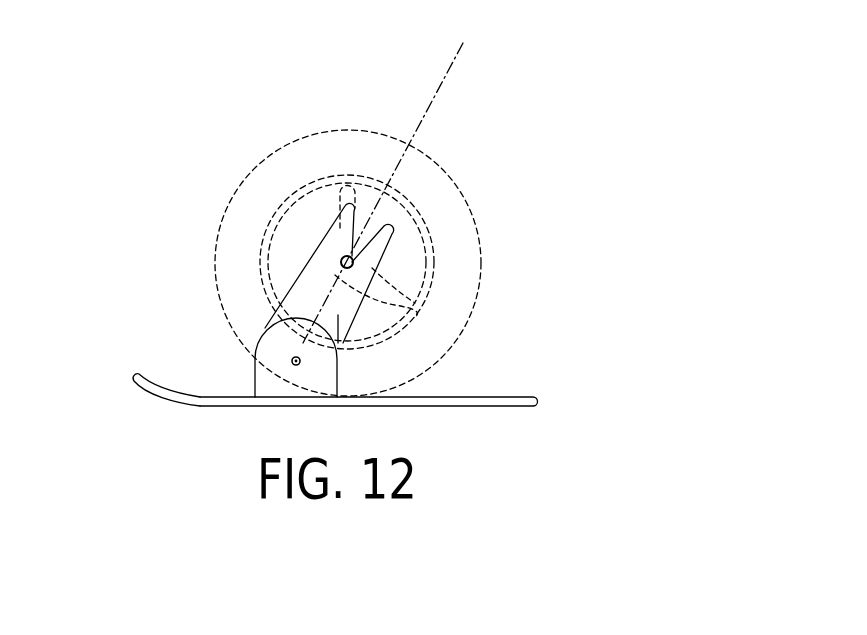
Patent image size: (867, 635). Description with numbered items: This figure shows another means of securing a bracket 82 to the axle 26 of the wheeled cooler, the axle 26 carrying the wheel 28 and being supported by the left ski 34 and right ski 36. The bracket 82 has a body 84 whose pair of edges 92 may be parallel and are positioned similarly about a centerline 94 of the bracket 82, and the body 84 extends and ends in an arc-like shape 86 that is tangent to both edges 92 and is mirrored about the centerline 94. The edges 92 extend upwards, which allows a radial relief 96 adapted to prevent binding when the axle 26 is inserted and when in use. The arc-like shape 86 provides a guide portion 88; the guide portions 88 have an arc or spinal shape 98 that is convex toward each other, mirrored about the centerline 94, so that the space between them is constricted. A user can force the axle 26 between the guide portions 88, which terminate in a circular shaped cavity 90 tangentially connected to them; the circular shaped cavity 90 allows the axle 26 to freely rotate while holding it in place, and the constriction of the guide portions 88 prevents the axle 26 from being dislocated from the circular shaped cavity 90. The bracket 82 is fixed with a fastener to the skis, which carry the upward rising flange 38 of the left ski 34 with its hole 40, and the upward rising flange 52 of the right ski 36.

The axle 26 is at (383, 250).
The wheel 28 is at (223, 218).
The left ski 34 is at (118, 417).
The right ski 36 is at (152, 396).
The upward rising flange 38 is at (322, 463).
The upward rising flange 52 is at (252, 380).
The hole 40 is at (297, 365).
The bracket 82 is at (292, 289).
The body 84 is at (344, 343).
The arc-like shape 86 is at (338, 216).
The guide portion 88 is at (338, 229).
The circular shaped cavity 90 is at (343, 263).
The edges 92 is at (303, 301).
The centerline 94 is at (453, 68).
The radial relief 96 is at (404, 192).
The arc or spinal shape 98 is at (372, 293).